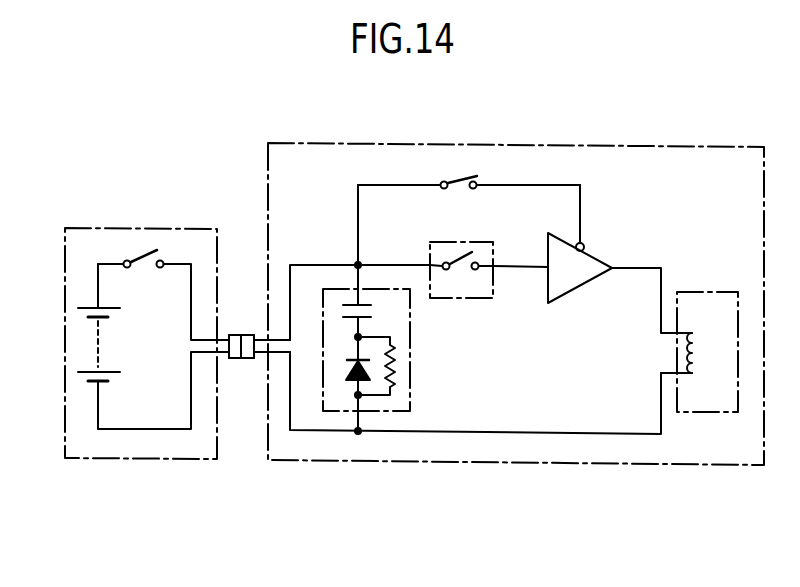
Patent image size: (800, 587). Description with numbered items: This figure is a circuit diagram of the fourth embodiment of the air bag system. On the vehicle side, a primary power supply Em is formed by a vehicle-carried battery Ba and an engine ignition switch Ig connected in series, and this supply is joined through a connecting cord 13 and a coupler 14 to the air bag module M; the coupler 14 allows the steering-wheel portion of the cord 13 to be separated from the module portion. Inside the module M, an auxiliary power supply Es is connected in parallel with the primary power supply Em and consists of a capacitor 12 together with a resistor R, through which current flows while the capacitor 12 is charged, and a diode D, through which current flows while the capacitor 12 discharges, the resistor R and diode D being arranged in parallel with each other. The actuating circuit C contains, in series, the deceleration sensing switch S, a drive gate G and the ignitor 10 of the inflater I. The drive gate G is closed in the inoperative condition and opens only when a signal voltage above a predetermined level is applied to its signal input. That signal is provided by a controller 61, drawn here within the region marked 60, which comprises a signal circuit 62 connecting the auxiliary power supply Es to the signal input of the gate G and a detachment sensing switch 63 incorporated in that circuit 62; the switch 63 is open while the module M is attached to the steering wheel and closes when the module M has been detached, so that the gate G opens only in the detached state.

The primary power supply Em is at (97, 462).
The battery Ba is at (106, 368).
The ignition switch Ig is at (143, 259).
The connecting cord 13 is at (255, 336).
The coupler 14 is at (246, 359).
The air bag module M is at (565, 136).
The bypass circuit 60 is at (596, 192).
The detachment sensing switch 63 is at (461, 180).
The controller 61 is at (516, 192).
The signal circuit 62 is at (566, 185).
The auxiliary power supply Es is at (420, 400).
The capacitor 12 is at (371, 304).
The diode D is at (346, 372).
The resistor R is at (396, 370).
The deceleration sensing switch S is at (438, 240).
The drive gate G is at (596, 261).
The actuating circuit C is at (633, 278).
The inflater I is at (687, 292).
The ignitor 10 is at (698, 352).